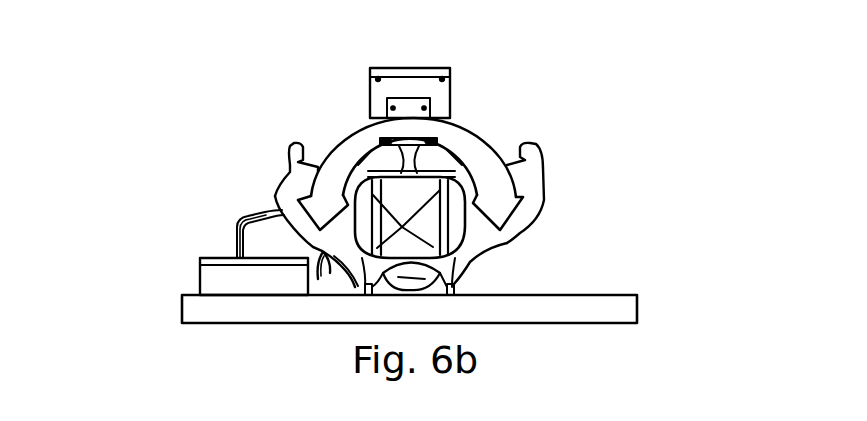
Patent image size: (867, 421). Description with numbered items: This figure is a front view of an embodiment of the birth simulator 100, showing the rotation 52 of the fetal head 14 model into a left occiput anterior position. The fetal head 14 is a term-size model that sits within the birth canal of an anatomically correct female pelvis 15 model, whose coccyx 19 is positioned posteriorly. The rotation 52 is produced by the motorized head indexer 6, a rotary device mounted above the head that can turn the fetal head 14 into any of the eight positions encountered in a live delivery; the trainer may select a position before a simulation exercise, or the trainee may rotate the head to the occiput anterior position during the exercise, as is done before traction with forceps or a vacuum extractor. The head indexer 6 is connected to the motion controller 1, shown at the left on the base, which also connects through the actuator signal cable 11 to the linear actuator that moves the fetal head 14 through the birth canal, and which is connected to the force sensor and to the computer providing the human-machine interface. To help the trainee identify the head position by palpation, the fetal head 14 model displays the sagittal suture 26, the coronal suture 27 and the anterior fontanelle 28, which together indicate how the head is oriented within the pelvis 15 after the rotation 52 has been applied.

The birth simulator 100 is at (483, 62).
The motion controller 1 is at (230, 283).
The motorized head indexer 6 is at (400, 137).
The actuator signal cable 11 is at (262, 215).
The fetal head 14 is at (383, 228).
The pelvis 15 is at (533, 193).
The coccyx 19 is at (432, 272).
The sagittal suture 26 is at (520, 170).
The coronal suture 27 is at (478, 242).
The anterior fontanelle 28 is at (375, 228).
The rotation 52 is at (473, 150).